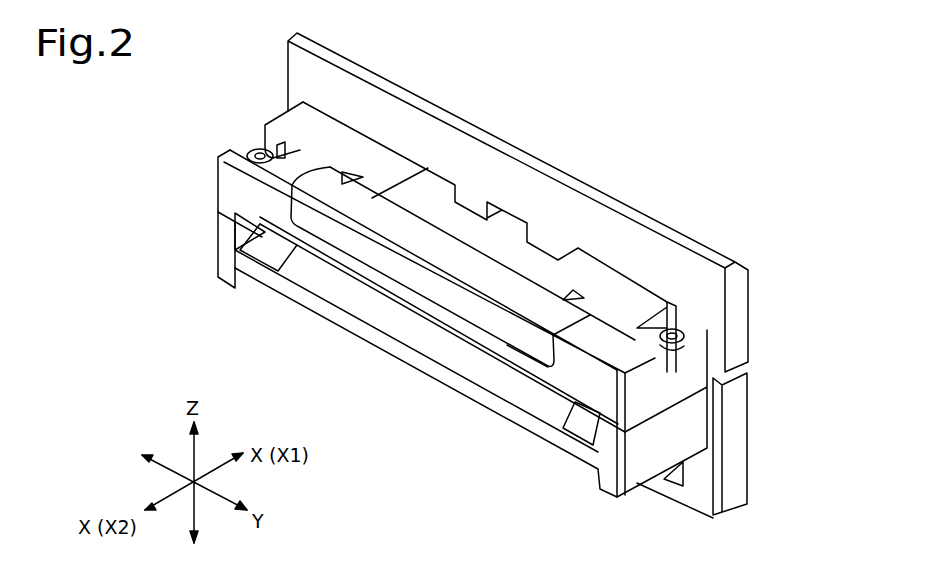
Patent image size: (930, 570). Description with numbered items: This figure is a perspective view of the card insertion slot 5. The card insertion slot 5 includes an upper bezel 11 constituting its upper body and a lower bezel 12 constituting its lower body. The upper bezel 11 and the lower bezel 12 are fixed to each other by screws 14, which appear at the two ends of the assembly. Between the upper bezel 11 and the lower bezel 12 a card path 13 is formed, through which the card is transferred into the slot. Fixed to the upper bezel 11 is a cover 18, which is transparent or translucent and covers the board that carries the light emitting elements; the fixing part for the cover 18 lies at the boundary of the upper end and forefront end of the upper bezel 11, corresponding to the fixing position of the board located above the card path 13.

The card insertion slot 5 is at (603, 106).
The upper bezel 11 is at (748, 303).
The lower bezel 12 is at (748, 453).
The card path 13 is at (312, 276).
The screws 14 is at (254, 150).
The cover 18 is at (508, 346).